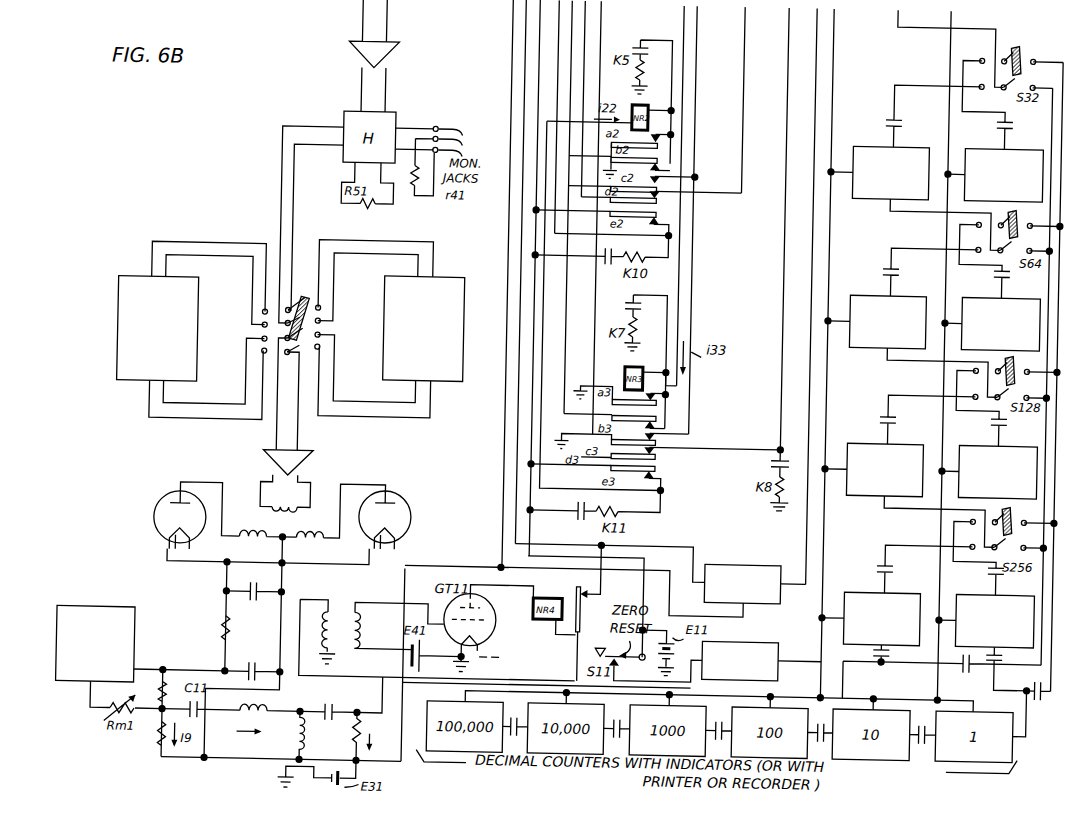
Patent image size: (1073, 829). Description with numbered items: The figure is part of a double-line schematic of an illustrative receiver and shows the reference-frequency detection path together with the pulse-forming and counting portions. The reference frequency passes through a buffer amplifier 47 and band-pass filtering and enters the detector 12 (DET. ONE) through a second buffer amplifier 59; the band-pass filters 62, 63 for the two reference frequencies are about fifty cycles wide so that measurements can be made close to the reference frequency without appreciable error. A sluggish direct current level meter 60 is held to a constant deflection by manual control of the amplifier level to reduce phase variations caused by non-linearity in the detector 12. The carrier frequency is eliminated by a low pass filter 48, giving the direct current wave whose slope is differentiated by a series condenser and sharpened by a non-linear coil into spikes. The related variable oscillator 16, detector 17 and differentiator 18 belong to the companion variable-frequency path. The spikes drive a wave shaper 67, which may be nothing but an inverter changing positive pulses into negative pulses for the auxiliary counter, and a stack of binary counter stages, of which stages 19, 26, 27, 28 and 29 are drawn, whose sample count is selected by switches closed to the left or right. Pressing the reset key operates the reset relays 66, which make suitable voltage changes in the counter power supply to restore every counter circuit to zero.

The buffer amplifier 47 is at (385, 50).
The band-pass filter 62 is at (118, 338).
The band-pass filter 63 is at (463, 311).
The buffer amplifier 59 is at (310, 461).
The detector 12 is at (246, 494).
The direct current level meter 60 is at (61, 673).
The low pass filter 48 is at (313, 707).
The wave shaper 67 is at (750, 561).
The reset relays 66 is at (764, 638).
The variable oscillator 16 is at (890, 173).
The detector 17 is at (887, 322).
The differentiator 18 is at (884, 470).
The binary counter 19 is at (881, 619).
The binary counter 26 is at (1003, 176).
The binary counter 27 is at (1000, 325).
The binary counter 28 is at (997, 473).
The binary counter 29 is at (994, 621).